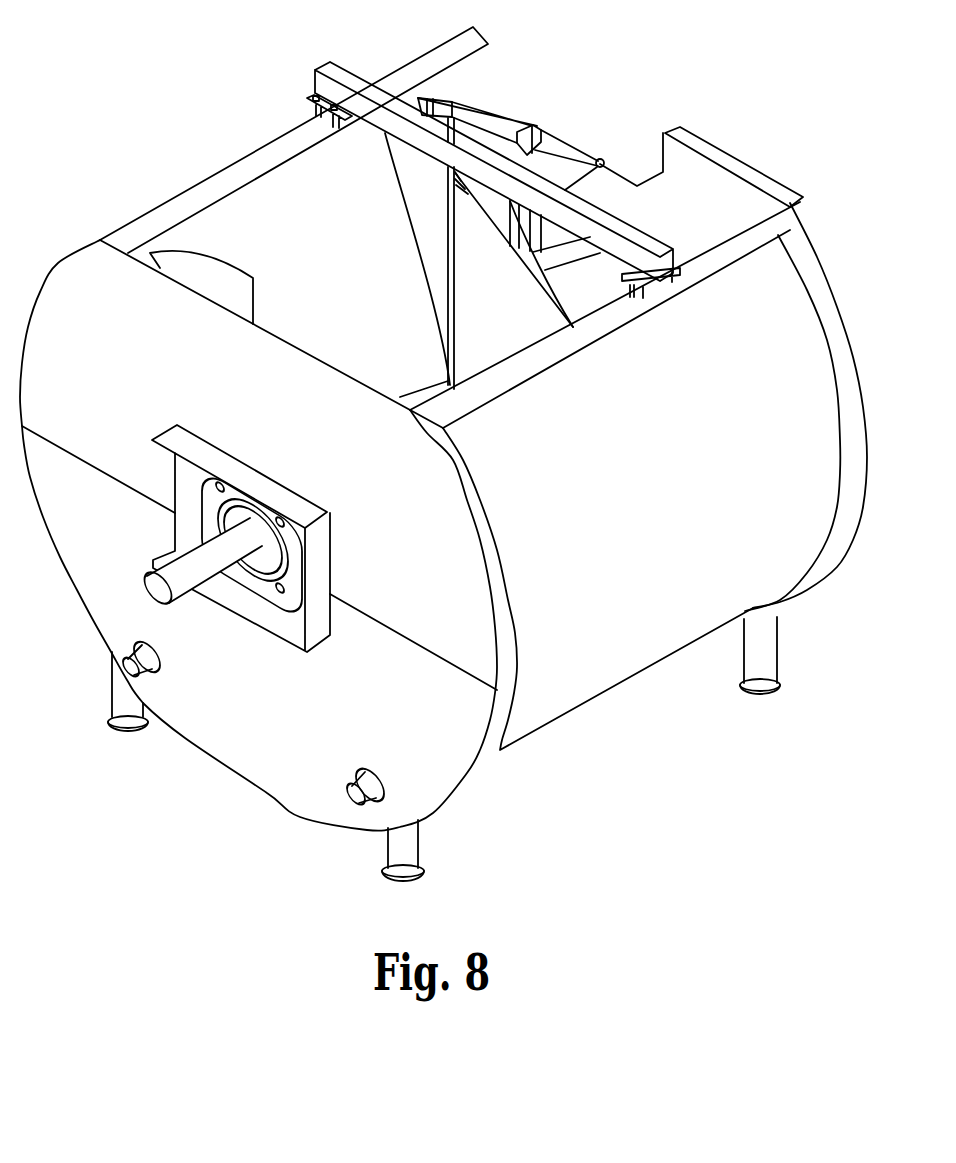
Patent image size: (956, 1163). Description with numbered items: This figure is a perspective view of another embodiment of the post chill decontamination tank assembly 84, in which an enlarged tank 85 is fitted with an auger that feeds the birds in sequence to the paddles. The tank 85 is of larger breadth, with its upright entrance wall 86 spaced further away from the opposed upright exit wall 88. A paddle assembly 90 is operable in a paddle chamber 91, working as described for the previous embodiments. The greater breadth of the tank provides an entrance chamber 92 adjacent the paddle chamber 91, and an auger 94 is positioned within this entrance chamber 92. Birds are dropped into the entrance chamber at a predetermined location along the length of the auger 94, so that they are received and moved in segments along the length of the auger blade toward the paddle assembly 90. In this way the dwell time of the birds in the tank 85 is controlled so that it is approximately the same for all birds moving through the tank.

The post chill decontamination tank assembly 84 is at (80, 206).
The tank 85 is at (55, 265).
The upright entrance wall 86 is at (416, 556).
The upright exit wall 88 is at (723, 206).
The paddle assembly 90 is at (427, 98).
The paddle chamber 91 is at (640, 205).
The entrance chamber 92 is at (273, 187).
The auger 94 is at (240, 281).